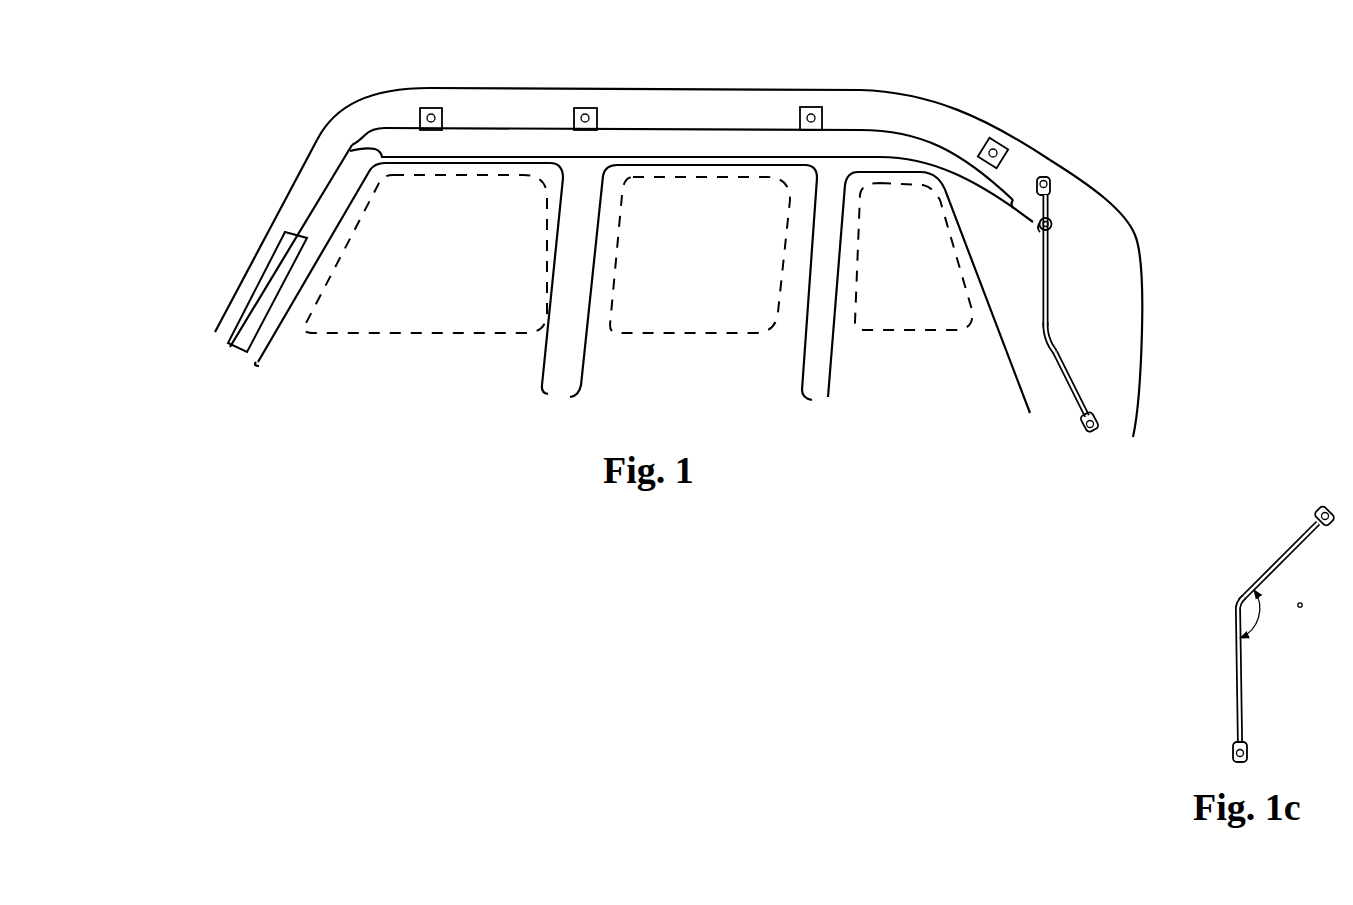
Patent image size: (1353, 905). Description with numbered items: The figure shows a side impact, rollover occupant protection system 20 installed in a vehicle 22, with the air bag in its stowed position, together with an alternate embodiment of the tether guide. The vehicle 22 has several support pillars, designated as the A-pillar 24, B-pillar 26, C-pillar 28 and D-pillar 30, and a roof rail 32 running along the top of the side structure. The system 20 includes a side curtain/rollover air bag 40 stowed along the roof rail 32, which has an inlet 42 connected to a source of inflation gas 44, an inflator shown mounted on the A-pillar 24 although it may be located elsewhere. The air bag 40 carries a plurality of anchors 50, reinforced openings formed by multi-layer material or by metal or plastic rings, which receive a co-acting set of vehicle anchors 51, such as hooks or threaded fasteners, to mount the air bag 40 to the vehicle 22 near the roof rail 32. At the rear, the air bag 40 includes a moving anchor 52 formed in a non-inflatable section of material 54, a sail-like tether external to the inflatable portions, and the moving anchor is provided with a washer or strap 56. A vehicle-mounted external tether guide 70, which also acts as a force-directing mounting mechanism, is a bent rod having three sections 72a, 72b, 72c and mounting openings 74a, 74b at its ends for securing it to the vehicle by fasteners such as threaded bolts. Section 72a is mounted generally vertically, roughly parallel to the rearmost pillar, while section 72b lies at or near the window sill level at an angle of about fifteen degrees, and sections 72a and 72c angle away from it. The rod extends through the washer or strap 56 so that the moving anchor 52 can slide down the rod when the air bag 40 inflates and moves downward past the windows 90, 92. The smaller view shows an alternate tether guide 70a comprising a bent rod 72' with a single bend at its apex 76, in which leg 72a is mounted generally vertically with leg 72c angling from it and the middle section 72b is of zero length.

In FIG. 1, the side impact, rollover occupant protection system 20 is at (703, 257).
In FIG. 1, the vehicle 22 is at (1041, 146).
In FIG. 1, the A-pillar 24 is at (277, 313).
In FIG. 1, the B-pillar 26 is at (557, 370).
In FIG. 1, the C-pillar 28 is at (812, 377).
In FIG. 1, the D-pillar 30 is at (1120, 328).
In FIG. 1, the roof rail 32 is at (517, 108).
In FIG. 1, the side curtain/rollover air bag 40 is at (651, 146).
In FIG. 1, the inlet 42 is at (352, 152).
In FIG. 1, the source of inflation gas 44 is at (281, 262).
In FIG. 1, the anchors 50 is at (444, 120).
In FIG. 1, the vehicle anchors 51 is at (429, 113).
In FIG. 1, the moving anchor 52 is at (1055, 217).
In FIG. 1, the non-inflatable section of material 54 is at (1014, 200).
In FIG. 1, the washer or strap 56 is at (1053, 224).
In FIG. 1, the external tether guide 70 is at (1061, 306).
In FIG. 1C, the alternate tether guide 70a is at (1244, 633).
In FIG. 1, the rod section 72a is at (1042, 250).
In FIG. 1C, the rod section 72a is at (1278, 563).
In FIG. 1, the rod section 72b is at (1050, 345).
In FIG. 1, the rod section 72c is at (1073, 385).
In FIG. 1C, the rod section 72c is at (1240, 677).
In FIG. 1C, the bent rod 72' is at (1214, 596).
In FIG. 1, the mounting opening 74a is at (1050, 193).
In FIG. 1, the mounting opening 74b is at (1095, 437).
In FIG. 1C, the apex 76 is at (1230, 613).
In FIG. 1, the window 90 is at (427, 290).
In FIG. 1, the window 92 is at (670, 312).